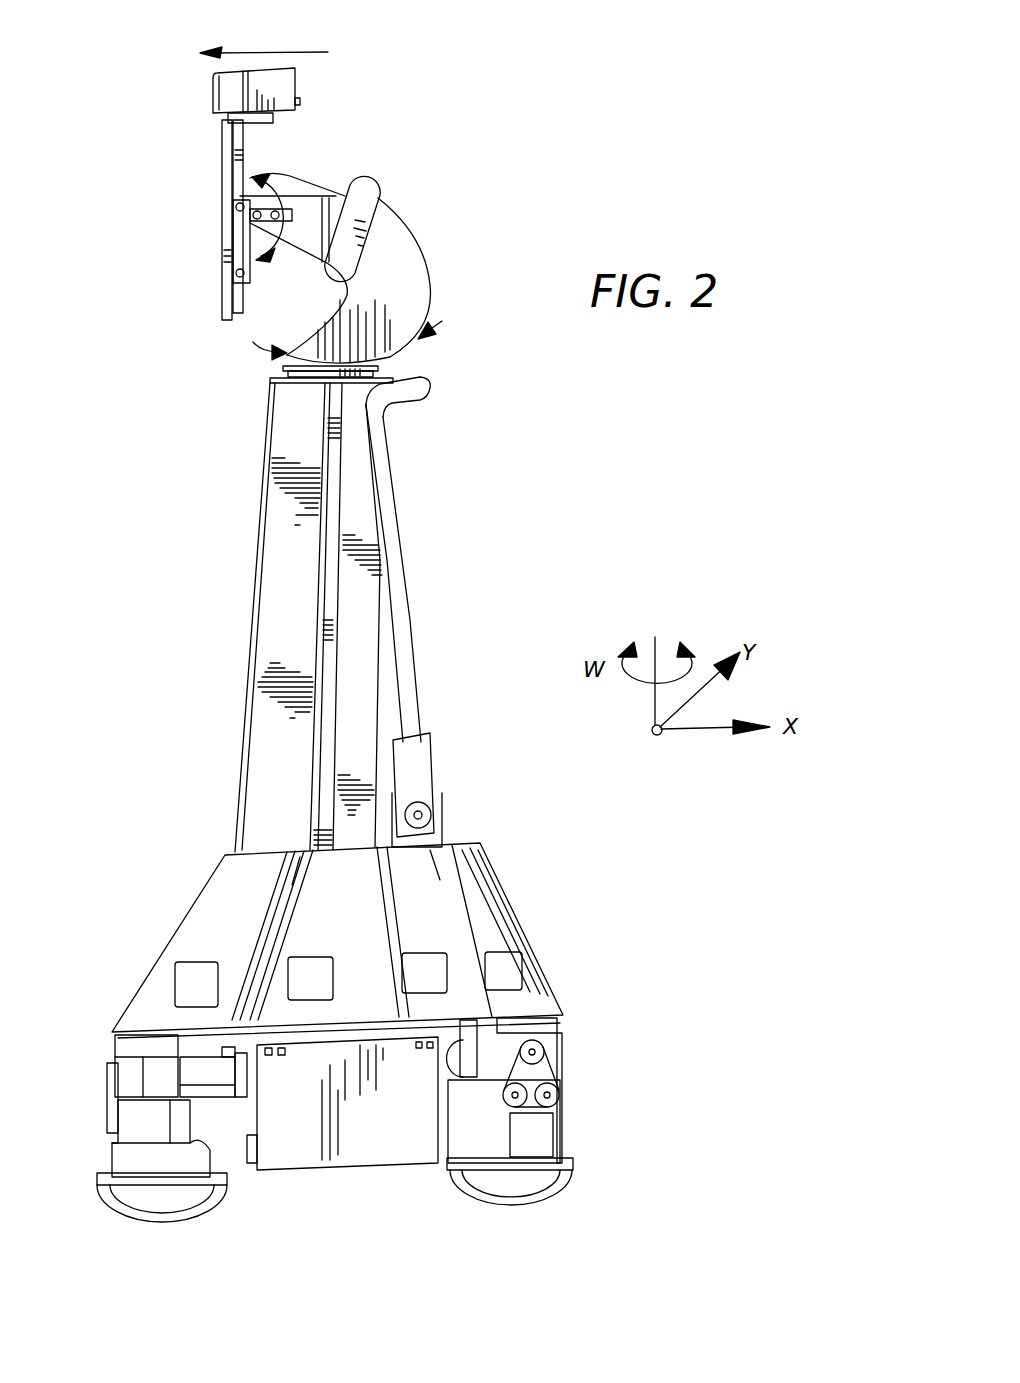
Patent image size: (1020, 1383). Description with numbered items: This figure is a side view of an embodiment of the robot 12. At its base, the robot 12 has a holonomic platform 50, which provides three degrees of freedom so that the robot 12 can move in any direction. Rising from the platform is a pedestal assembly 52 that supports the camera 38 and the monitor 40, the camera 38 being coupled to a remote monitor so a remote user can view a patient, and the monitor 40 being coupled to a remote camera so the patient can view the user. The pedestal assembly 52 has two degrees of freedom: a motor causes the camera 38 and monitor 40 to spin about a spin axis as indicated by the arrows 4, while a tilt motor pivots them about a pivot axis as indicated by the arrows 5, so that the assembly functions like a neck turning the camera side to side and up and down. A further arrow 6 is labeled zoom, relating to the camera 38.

The robot 12 is at (530, 869).
The camera 38 is at (237, 97).
The monitor 40 is at (222, 197).
The arrows 5 is at (267, 203).
The arrows 4 is at (435, 339).
The zoom arrow 6 is at (320, 49).
The pedestal assembly 52 is at (225, 514).
The holonomic platform 50 is at (190, 912).